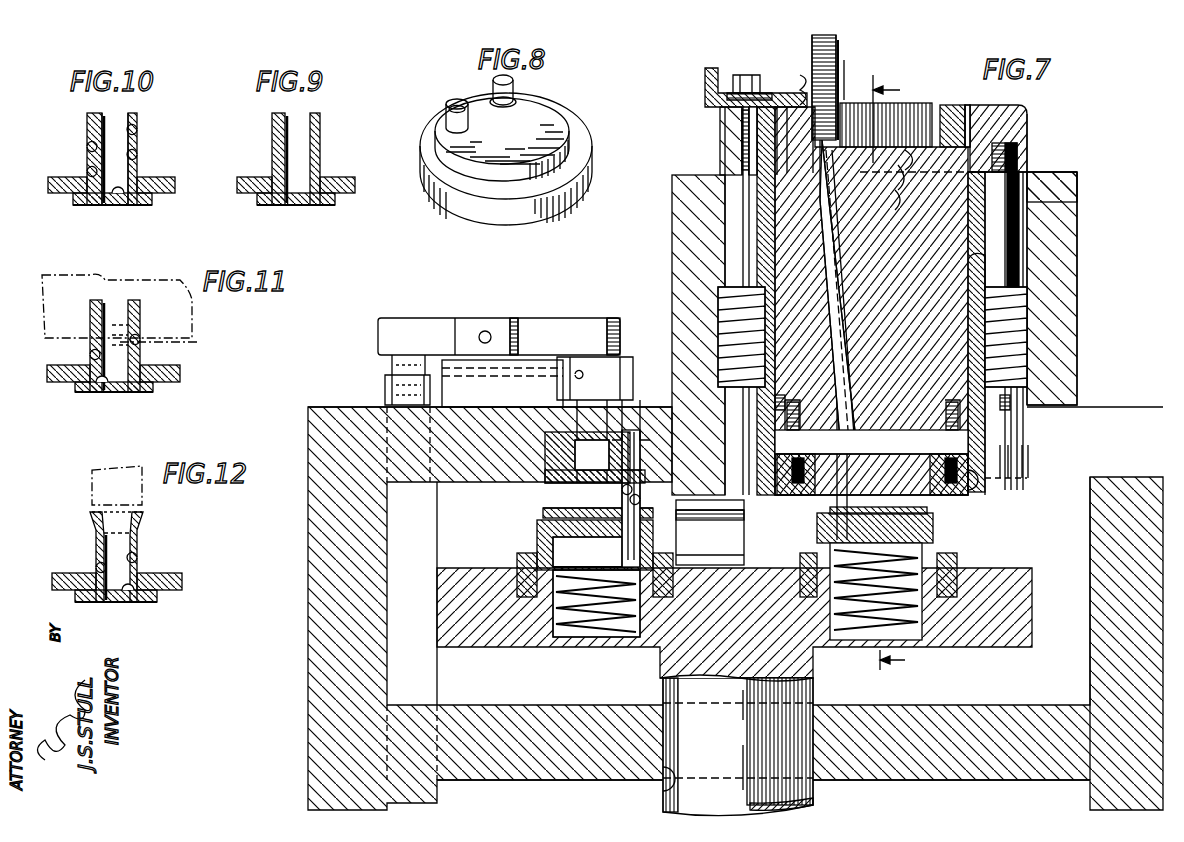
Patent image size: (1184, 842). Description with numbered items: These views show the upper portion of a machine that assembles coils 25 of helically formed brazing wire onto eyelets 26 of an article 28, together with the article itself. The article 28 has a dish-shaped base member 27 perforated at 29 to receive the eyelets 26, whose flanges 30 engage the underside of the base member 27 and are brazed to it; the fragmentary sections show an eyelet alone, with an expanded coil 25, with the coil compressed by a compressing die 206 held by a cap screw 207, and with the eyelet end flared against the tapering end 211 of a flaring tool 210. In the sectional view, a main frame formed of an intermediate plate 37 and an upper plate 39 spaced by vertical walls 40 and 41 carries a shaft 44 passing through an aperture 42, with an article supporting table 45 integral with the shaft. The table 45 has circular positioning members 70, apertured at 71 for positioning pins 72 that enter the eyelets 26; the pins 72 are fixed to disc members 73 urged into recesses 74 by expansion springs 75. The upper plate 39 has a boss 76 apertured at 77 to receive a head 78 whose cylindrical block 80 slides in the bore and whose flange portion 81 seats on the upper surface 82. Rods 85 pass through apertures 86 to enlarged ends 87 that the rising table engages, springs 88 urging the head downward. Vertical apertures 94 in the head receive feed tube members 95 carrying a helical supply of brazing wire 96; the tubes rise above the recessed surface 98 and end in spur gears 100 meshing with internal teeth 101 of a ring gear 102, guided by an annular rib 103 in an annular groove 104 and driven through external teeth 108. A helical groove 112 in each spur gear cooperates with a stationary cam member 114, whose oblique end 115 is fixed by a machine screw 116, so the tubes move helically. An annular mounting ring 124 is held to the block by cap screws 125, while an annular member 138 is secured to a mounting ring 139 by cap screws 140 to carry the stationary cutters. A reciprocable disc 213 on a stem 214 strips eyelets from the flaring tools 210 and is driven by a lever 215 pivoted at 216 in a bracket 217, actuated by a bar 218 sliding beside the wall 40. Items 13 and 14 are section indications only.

In FIG. 7, the cylinder / section 13 is at (886, 373).
In FIG. 7, the rod 14 is at (840, 50).
In FIG. 10, the coil of brazing wire 25 is at (82, 143).
In FIG. 11, the coil of brazing wire 25 is at (82, 352).
In FIG. 12, the coil of brazing wire 25 is at (148, 560).
In FIG. 8, the coil of brazing wire 25 is at (515, 98).
In FIG. 7, the coil of brazing wire 25 is at (645, 505).
In FIG. 10, the eyelet 26 is at (138, 140).
In FIG. 9, the eyelet 26 is at (320, 140).
In FIG. 11, the eyelet 26 is at (130, 300).
In FIG. 12, the eyelet 26 is at (140, 535).
In FIG. 8, the eyelet 26 is at (470, 102).
In FIG. 7, the eyelet 26 is at (640, 494).
In FIG. 10, the dish-shaped base member 27 is at (150, 180).
In FIG. 9, the dish-shaped base member 27 is at (240, 178).
In FIG. 11, the dish-shaped base member 27 is at (168, 380).
In FIG. 12, the dish-shaped base member 27 is at (182, 580).
In FIG. 8, the dish-shaped base member 27 is at (552, 120).
In FIG. 7, the dish-shaped base member 27 is at (543, 513).
In FIG. 8, the article 28 is at (596, 124).
In FIG. 7, the article 28 is at (543, 510).
In FIG. 10, the perforation 29 is at (121, 198).
In FIG. 9, the perforation 29 is at (315, 180).
In FIG. 11, the perforation 29 is at (102, 390).
In FIG. 12, the perforation 29 is at (130, 600).
In FIG. 10, the flange 30 is at (148, 206).
In FIG. 9, the flange 30 is at (318, 206).
In FIG. 11, the flange 30 is at (142, 394).
In FIG. 12, the flange 30 is at (156, 604).
In FIG. 7, the intermediate plate 37 is at (552, 780).
In FIG. 7, the upper plate 39 is at (475, 420).
In FIG. 7, the vertical wall 40 is at (308, 583).
In FIG. 7, the vertical wall 41 is at (1090, 664).
In FIG. 7, the aperture 42 is at (663, 790).
In FIG. 7, the shaft 44 is at (663, 694).
In FIG. 7, the article supporting table 45 is at (487, 647).
In FIG. 7, the positioning member 70 is at (537, 540).
In FIG. 7, the aperture 71 is at (600, 540).
In FIG. 7, the positioning pin 72 is at (600, 555).
In FIG. 7, the disc member 73 is at (556, 628).
In FIG. 7, the recess 74 is at (517, 560).
In FIG. 7, the expansion spring 75 is at (580, 630).
In FIG. 7, the boss 76 is at (1078, 280).
In FIG. 7, the aperture 77 is at (1010, 262).
In FIG. 7, the head 78 is at (1040, 115).
In FIG. 7, the cylindrical block 80 is at (775, 268).
In FIG. 7, the flange portion 81 is at (1022, 140).
In FIG. 7, the upper surface 82 is at (1040, 175).
In FIG. 7, the rod 85 is at (735, 208).
In FIG. 7, the aperture 86 is at (730, 240).
In FIG. 7, the enlarged end 87 is at (725, 392).
In FIG. 7, the spring 88 is at (718, 310).
In FIG. 7, the vertical aperture 94 is at (842, 285).
In FIG. 7, the feed tube member 95 is at (848, 318).
In FIG. 7, the helical supply of brazing wire 96 is at (836, 40).
In FIG. 7, the recessed surface 98 is at (942, 106).
In FIG. 7, the spur gear 100 is at (845, 70).
In FIG. 7, the internal teeth 101 is at (967, 105).
In FIG. 7, the ring gear 102 is at (925, 161).
In FIG. 7, the annular rib 103 is at (917, 178).
In FIG. 7, the annular groove 104 is at (919, 200).
In FIG. 7, the external teeth 108 is at (988, 108).
In FIG. 7, the helical groove 112 is at (805, 75).
In FIG. 7, the stationary cam member 114 is at (705, 88).
In FIG. 7, the oblique and arcuate end 115 is at (796, 88).
In FIG. 7, the machine screw 116 is at (742, 75).
In FIG. 7, the annular mounting ring 124 is at (1005, 425).
In FIG. 7, the cap screw 125 is at (780, 400).
In FIG. 7, the annular member 138 is at (1024, 495).
In FIG. 7, the mounting ring 139 is at (1016, 482).
In FIG. 7, the cap screw 140 is at (968, 490).
In FIG. 11, the compressing die 206 is at (200, 343).
In FIG. 11, the cap screw 207 is at (102, 276).
In FIG. 12, the flaring tool 210 is at (92, 478).
In FIG. 7, the flaring tool 210 is at (642, 440).
In FIG. 12, the tapering end 211 is at (92, 510).
In FIG. 7, the tapering end 211 is at (645, 470).
In FIG. 7, the reciprocable disc 213 is at (548, 484).
In FIG. 7, the stem 214 is at (580, 455).
In FIG. 7, the lever 215 is at (562, 322).
In FIG. 7, the pivot 216 is at (485, 331).
In FIG. 7, the bracket 217 is at (457, 352).
In FIG. 7, the bar 218 is at (432, 696).